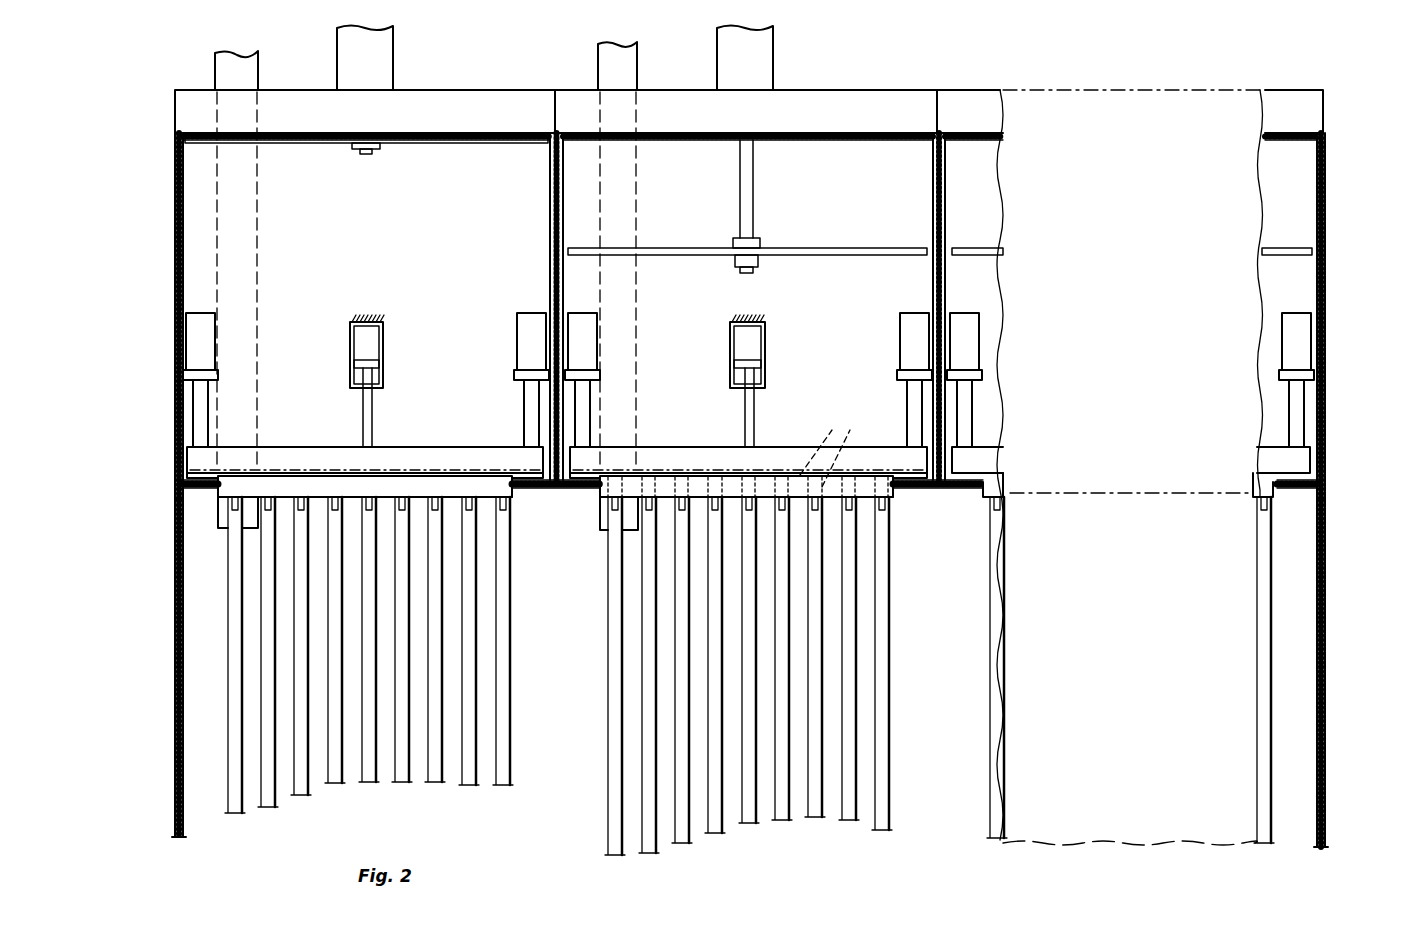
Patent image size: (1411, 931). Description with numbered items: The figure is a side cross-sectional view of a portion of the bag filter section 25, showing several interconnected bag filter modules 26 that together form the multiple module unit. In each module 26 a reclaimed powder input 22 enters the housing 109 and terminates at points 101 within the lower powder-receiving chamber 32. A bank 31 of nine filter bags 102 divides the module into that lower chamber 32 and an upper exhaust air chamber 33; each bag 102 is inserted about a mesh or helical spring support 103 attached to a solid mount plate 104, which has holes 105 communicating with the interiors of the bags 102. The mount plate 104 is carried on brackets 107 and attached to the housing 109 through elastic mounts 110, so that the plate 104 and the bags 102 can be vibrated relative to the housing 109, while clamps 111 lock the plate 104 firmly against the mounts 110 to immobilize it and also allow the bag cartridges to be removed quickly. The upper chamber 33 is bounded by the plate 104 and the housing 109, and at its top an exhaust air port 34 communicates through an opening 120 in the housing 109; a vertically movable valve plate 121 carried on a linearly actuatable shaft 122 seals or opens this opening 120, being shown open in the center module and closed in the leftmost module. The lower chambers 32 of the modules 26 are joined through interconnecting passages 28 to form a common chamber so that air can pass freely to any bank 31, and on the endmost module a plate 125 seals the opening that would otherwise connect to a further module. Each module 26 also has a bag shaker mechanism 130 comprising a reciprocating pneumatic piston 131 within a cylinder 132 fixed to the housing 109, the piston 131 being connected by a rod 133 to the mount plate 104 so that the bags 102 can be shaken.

The input 22 is at (232, 62).
The bag filter section 25 is at (323, 850).
The bag filter module 26 is at (973, 151).
The interconnecting passage 28 is at (755, 808).
The bank of filter bags 31 is at (358, 772).
The lower chamber 32 is at (200, 688).
The upper chamber 33 is at (653, 270).
The exhaust air port 34 is at (388, 50).
The terminating point 101 is at (222, 532).
The bag 102 is at (647, 643).
The support 103 is at (344, 492).
The mount plate 104 is at (420, 470).
The hole 105 is at (832, 447).
The bracket 107 is at (232, 484).
The housing 109 is at (180, 229).
The elastic mount 110 is at (184, 483).
The clamp 111 is at (192, 346).
The opening 120 is at (500, 133).
The valve plate 121 is at (438, 144).
The shaft 122 is at (366, 160).
The plate 125 is at (175, 631).
The bag shaker mechanism 130 is at (566, 381).
The piston 131 is at (356, 364).
The cylinder 132 is at (388, 381).
The rod 133 is at (373, 418).